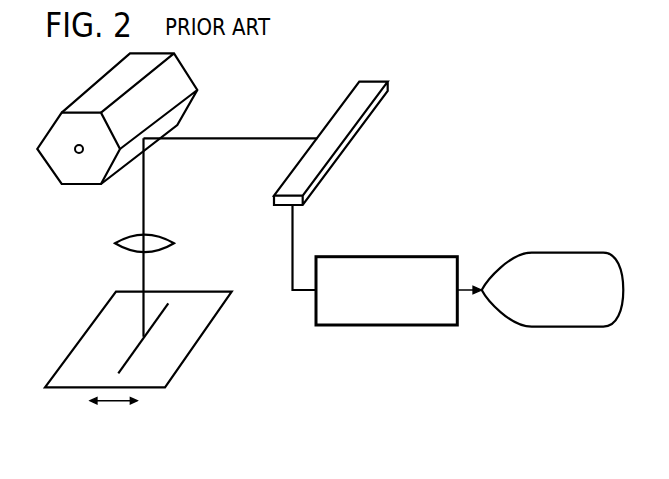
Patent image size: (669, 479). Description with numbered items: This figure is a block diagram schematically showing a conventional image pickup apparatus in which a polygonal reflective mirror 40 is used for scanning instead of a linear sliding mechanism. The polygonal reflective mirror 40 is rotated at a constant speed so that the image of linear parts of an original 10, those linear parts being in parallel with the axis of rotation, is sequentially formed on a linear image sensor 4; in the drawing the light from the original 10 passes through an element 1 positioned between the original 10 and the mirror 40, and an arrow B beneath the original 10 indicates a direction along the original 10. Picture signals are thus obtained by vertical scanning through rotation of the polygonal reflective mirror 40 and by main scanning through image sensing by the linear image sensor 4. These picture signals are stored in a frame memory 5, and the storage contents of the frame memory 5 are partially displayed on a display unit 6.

The polygonal reflective mirror 40 is at (176, 72).
The linear image sensor 4 is at (375, 83).
The lens 1 is at (162, 235).
The original 10 is at (202, 326).
The scanning direction B is at (117, 403).
The frame memory 5 is at (410, 255).
The display unit 6 is at (568, 253).